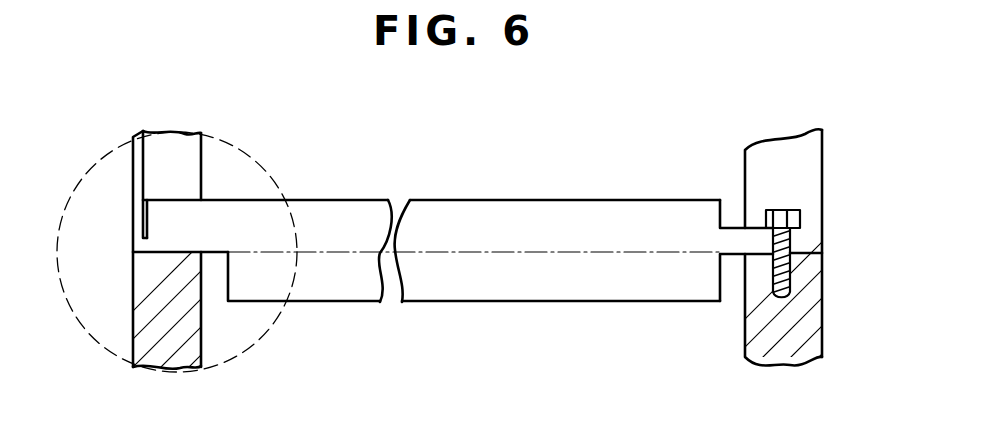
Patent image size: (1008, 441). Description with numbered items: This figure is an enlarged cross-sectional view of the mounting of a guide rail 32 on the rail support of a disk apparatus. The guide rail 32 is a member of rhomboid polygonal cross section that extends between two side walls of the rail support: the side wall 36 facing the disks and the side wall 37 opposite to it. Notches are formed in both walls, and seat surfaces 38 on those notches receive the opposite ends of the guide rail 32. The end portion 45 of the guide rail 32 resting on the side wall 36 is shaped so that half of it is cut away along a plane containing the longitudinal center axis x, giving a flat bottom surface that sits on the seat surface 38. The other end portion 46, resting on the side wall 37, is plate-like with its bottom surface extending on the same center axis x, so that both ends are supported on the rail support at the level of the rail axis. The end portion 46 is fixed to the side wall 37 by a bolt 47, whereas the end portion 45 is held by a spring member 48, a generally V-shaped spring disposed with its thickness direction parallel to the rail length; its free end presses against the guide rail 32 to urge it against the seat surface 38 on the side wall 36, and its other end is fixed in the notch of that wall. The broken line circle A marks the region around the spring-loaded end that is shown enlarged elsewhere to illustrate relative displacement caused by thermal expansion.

The guide rail 32 is at (337, 215).
The side wall 36 is at (195, 348).
The side wall 37 is at (750, 322).
The seat surface 38 is at (157, 250).
The end portion 45 is at (170, 203).
The end portion 46 is at (803, 238).
The bolt 47 is at (778, 215).
The spring member 48 is at (137, 165).
The broken line circle A is at (97, 342).
The longitudinal center axis X is at (512, 250).